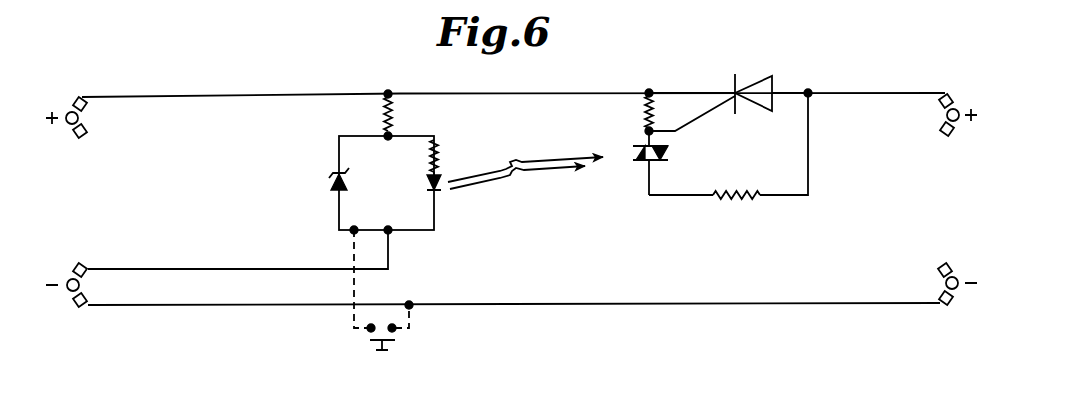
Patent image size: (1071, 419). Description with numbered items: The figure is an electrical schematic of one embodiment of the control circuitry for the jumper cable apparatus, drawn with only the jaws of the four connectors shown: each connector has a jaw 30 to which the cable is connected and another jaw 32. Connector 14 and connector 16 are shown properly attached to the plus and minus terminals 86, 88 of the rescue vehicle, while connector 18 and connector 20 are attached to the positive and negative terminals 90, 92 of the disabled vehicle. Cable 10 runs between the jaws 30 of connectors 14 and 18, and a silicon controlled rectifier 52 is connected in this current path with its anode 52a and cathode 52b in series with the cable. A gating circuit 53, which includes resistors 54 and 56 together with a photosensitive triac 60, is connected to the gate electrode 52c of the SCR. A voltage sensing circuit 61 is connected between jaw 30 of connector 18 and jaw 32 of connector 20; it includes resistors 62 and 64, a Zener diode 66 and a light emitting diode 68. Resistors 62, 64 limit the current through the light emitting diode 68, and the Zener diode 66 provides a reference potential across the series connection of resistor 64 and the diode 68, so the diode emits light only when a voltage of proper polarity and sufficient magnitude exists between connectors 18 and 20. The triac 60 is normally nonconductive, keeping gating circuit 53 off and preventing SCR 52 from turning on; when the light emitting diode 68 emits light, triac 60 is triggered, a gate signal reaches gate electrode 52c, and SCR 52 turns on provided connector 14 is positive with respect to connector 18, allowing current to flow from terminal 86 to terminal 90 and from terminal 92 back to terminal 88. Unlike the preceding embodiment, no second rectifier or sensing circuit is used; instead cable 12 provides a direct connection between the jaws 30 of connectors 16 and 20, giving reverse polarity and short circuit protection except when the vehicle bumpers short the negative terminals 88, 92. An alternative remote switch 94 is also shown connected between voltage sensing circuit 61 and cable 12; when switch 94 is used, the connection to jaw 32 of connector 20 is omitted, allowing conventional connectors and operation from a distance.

The cable 10 is at (262, 95).
The cable 12 is at (588, 305).
The connector 14 is at (915, 93).
The connector 16 is at (913, 313).
The connector 18 is at (106, 94).
The connector 20 is at (120, 270).
The jaw 30 is at (77, 95).
The jaw 32 is at (85, 133).
The silicon controlled rectifier 52 is at (736, 96).
The anode 52a is at (794, 90).
The cathode 52b is at (680, 90).
The gate electrode 52c is at (690, 125).
The gating circuit 53 is at (696, 163).
The resistor 54 is at (645, 114).
The resistor 56 is at (735, 200).
The photosensitive triac 60 is at (668, 154).
The voltage sensing circuit 61 is at (345, 179).
The resistor 62 is at (394, 112).
The resistor 64 is at (443, 138).
The Zener diode 66 is at (325, 190).
The light emitting diode 68 is at (445, 170).
The plus terminal 86 is at (945, 114).
The minus terminal 88 is at (940, 283).
The positive terminal 90 is at (82, 117).
The negative terminal 92 is at (82, 285).
The switch 94 is at (405, 338).